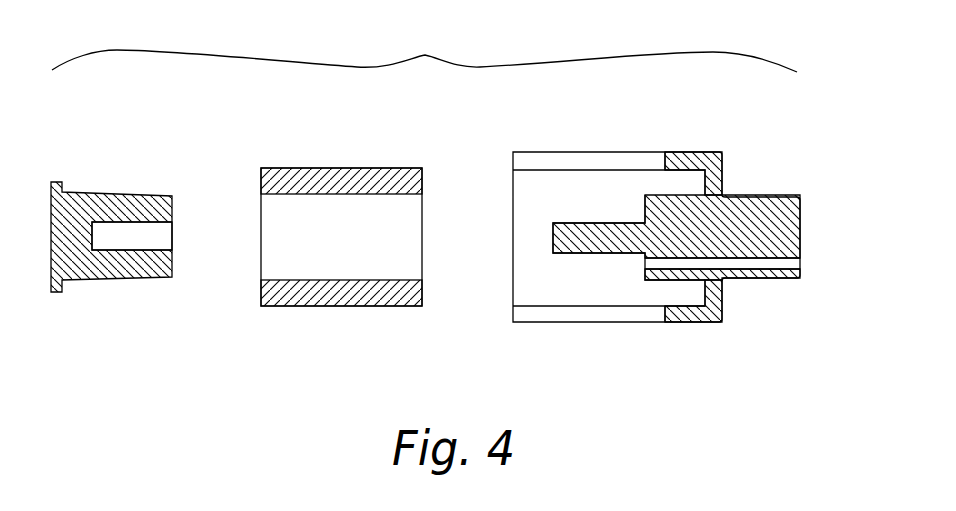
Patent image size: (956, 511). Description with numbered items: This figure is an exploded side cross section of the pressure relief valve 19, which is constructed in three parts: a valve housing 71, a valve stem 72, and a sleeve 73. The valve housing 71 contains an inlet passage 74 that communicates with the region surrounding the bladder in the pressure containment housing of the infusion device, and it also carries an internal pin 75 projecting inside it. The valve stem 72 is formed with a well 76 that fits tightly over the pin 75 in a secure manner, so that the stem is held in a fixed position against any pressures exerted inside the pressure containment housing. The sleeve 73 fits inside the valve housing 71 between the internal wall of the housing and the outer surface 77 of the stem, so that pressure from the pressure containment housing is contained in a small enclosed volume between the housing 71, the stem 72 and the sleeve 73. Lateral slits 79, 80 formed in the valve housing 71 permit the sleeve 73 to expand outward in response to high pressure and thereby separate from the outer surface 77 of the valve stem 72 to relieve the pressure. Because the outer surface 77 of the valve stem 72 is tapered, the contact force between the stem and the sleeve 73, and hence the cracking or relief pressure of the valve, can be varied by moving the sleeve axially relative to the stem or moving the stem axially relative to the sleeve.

The pressure relief valve 19 is at (424, 43).
The valve housing 71 is at (659, 234).
The valve stem 72 is at (127, 227).
The sleeve 73 is at (380, 155).
The inlet passage 74 is at (753, 265).
The internal pin 75 is at (585, 248).
The well 76 is at (163, 237).
The outer surface 77 is at (125, 200).
The lateral slit 79 is at (568, 160).
The lateral slit 80 is at (553, 315).